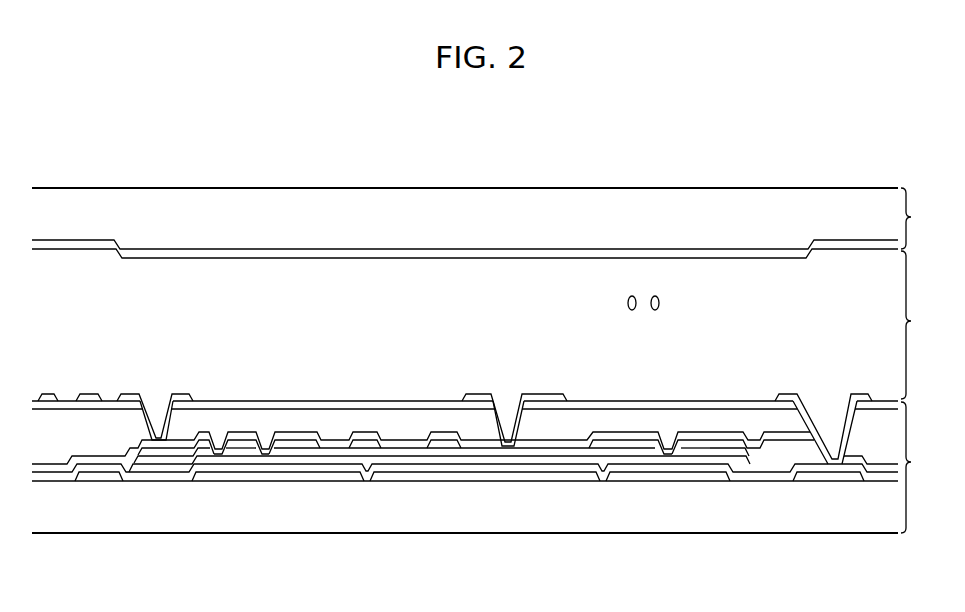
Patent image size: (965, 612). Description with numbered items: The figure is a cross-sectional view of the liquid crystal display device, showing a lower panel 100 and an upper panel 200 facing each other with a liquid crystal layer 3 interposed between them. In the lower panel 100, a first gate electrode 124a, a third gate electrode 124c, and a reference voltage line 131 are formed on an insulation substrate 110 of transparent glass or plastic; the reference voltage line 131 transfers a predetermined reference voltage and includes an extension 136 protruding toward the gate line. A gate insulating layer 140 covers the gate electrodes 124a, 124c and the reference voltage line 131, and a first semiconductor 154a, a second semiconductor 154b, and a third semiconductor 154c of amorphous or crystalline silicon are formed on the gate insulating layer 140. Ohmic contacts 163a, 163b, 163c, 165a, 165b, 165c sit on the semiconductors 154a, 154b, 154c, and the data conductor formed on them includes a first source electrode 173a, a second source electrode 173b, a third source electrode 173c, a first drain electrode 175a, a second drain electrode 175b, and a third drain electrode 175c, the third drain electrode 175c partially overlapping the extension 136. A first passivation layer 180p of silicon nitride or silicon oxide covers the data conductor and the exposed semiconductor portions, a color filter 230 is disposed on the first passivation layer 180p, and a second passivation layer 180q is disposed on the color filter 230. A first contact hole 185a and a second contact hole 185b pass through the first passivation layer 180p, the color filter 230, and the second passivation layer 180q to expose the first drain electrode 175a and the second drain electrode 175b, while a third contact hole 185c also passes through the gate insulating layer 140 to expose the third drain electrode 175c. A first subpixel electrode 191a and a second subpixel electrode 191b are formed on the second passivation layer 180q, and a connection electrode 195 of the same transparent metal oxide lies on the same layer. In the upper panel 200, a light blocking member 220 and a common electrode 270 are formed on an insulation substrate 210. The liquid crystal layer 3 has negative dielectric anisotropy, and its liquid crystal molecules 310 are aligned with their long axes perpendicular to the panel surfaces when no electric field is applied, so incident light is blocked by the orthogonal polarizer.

The upper panel 200 is at (921, 218).
The insulation substrate 210 is at (541, 203).
The light blocking member 220 is at (698, 245).
The common electrode 270 is at (625, 255).
The liquid crystal layer 3 is at (914, 325).
The liquid crystal molecules 310 is at (659, 303).
The lower panel 100 is at (921, 467).
The insulation substrate 110 is at (594, 512).
The first gate electrode 124a is at (214, 477).
The third gate electrode 124c is at (650, 478).
The reference voltage line 131 is at (95, 477).
The extension 136 is at (827, 478).
The gate insulating layer 140 is at (525, 472).
The first semiconductor 154a is at (197, 462).
The second semiconductor 154b is at (285, 457).
The third semiconductor 154c is at (418, 460).
The ohmic contact 163a is at (232, 450).
The ohmic contact 163b is at (258, 452).
The ohmic contact 163c is at (638, 453).
The ohmic contact 165a is at (140, 460).
The ohmic contact 165b is at (306, 452).
The ohmic contact 165c is at (715, 453).
The first source electrode 173a is at (240, 446).
The second source electrode 173b is at (254, 440).
The third source electrode 173c is at (438, 445).
The first drain electrode 175a is at (160, 452).
The second drain electrode 175b is at (297, 447).
The third drain electrode 175c is at (700, 443).
The first passivation layer 180p is at (50, 467).
The second passivation layer 180q is at (378, 404).
The color filter 230 is at (343, 417).
The first contact hole 185a is at (147, 420).
The second contact hole 185b is at (500, 420).
The third contact hole 185c is at (805, 420).
The first subpixel electrode 191a is at (45, 395).
The second subpixel electrode 191b is at (475, 395).
The connection electrode 195 is at (847, 452).